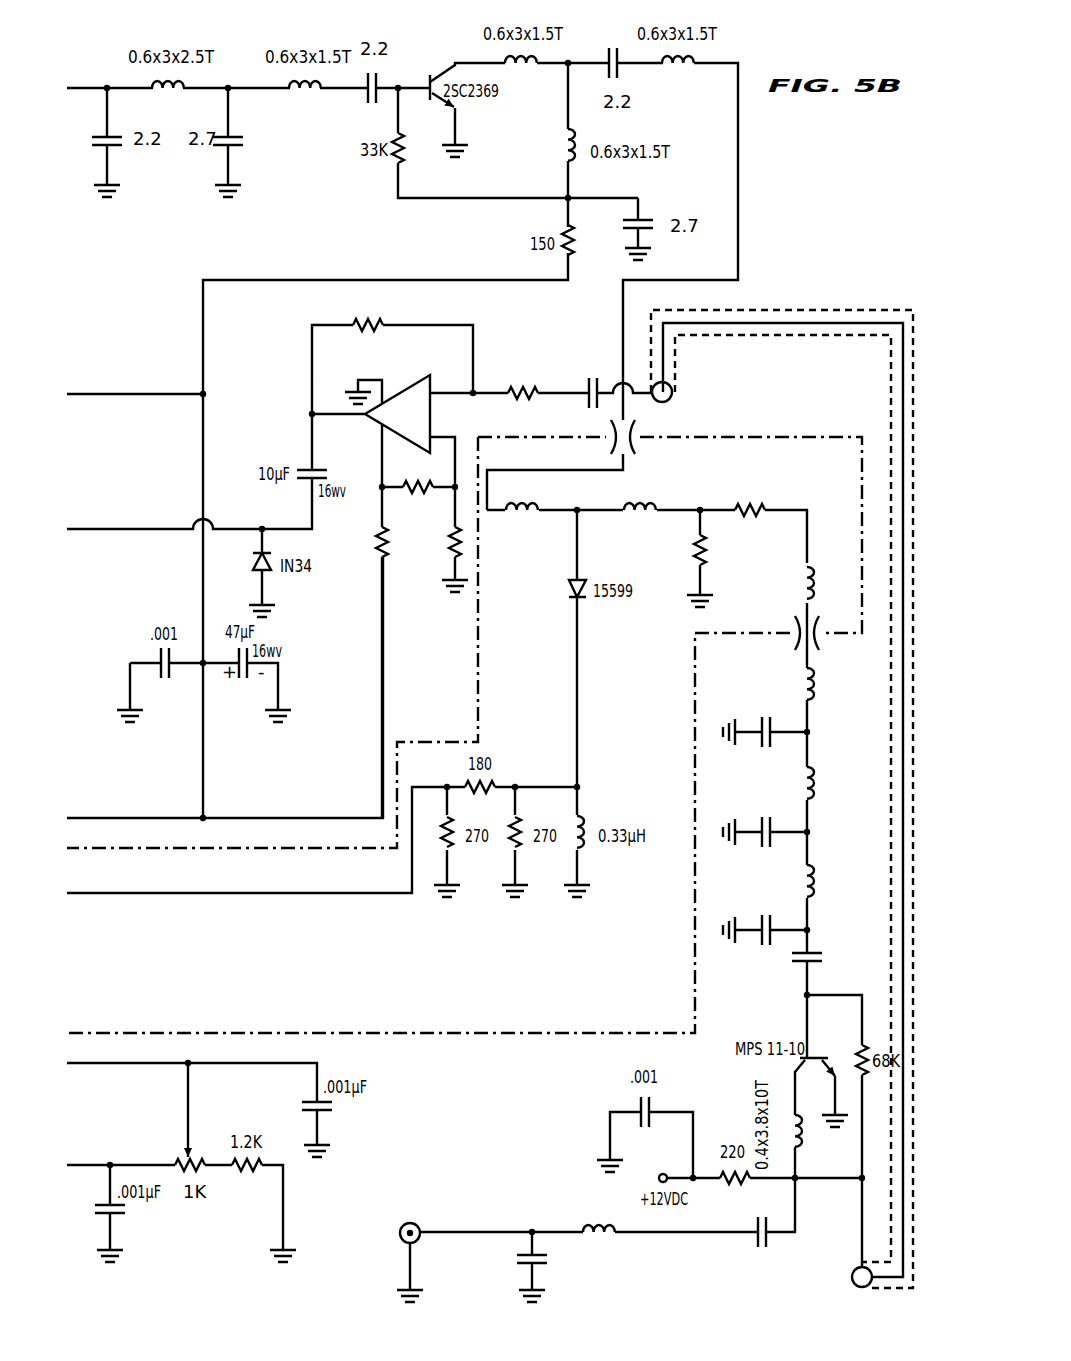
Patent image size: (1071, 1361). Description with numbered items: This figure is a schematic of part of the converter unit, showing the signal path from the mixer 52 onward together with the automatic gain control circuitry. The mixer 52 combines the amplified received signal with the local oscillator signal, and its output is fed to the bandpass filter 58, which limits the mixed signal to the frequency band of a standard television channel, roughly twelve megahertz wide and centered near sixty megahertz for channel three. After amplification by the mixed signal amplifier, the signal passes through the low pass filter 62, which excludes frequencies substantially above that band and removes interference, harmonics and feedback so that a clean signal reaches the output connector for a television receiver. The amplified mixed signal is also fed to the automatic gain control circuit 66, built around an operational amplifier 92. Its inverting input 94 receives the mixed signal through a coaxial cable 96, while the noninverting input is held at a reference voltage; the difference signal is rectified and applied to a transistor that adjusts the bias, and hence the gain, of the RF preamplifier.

The mixer 52 is at (682, 462).
The bandpass filter 58 is at (858, 770).
The low pass filter 62 is at (604, 1266).
The automatic gain control circuit 66 is at (338, 308).
The operational amplifier 92 is at (411, 385).
The inverting input 94 is at (458, 392).
The coaxial cable 96 is at (874, 310).